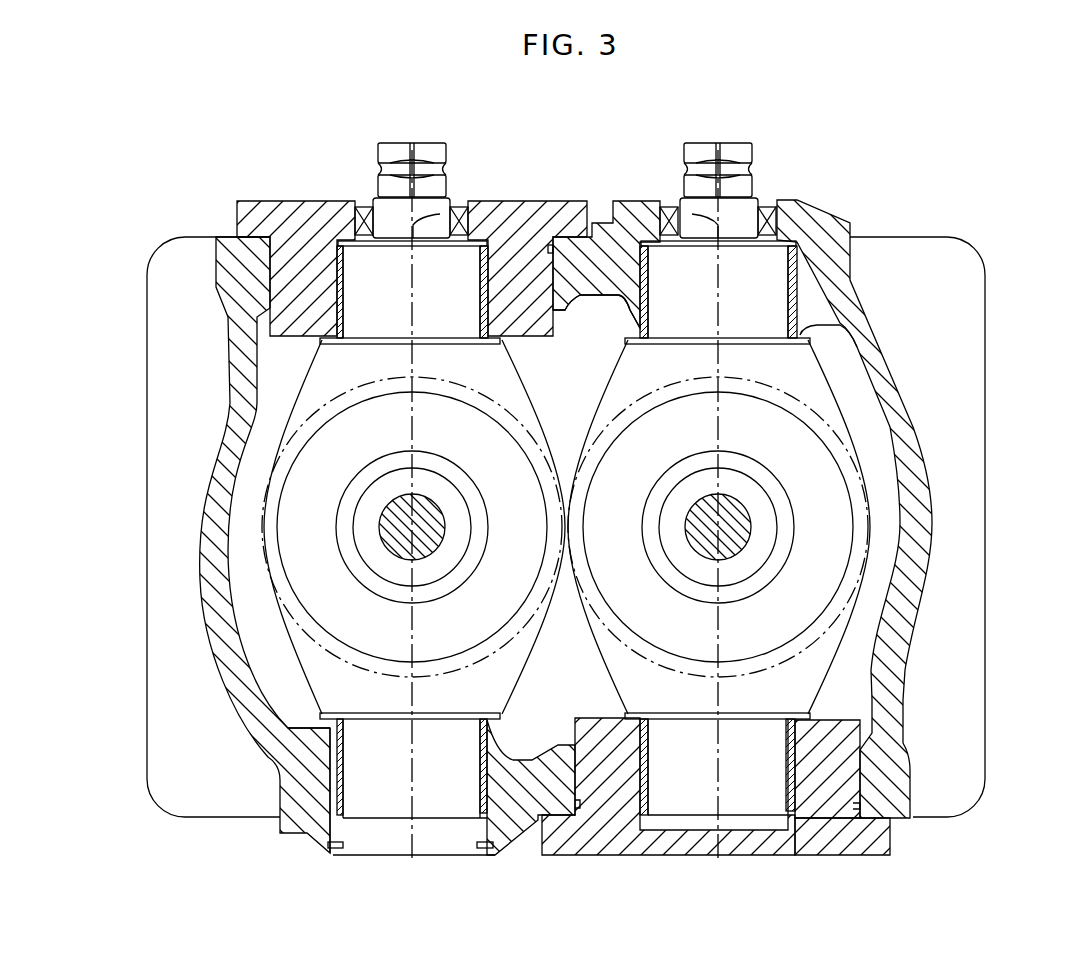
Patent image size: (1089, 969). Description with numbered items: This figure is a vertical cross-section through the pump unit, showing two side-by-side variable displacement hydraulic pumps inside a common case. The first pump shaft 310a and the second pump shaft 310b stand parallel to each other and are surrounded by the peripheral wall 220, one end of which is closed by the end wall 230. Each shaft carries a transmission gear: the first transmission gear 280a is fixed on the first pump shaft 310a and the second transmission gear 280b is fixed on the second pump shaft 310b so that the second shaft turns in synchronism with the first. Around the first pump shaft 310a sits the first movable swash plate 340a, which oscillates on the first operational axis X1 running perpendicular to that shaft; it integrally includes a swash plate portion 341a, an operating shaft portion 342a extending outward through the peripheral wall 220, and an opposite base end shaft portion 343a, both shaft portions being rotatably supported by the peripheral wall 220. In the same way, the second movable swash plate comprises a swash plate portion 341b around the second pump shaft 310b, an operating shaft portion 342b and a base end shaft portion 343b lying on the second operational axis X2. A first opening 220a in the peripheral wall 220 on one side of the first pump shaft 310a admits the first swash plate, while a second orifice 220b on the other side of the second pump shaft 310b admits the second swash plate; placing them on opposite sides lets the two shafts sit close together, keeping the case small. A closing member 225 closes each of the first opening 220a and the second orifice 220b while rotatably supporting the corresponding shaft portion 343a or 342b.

The closing member 225 is at (295, 227).
The operating shaft portion 342b is at (387, 218).
The second operational axis X2 is at (450, 190).
The second orifice 220b is at (543, 250).
The peripheral wall 220 is at (600, 250).
The first operational axis X1 is at (683, 190).
The operating shaft portion 342a is at (740, 217).
The first movable swash plate 340a is at (848, 393).
The second transmission gear 280b is at (472, 385).
The first transmission gear 280a is at (803, 396).
The second pump shaft 310b is at (392, 537).
The first pump shaft 310a is at (700, 542).
The swash plate portion 341b is at (227, 657).
The swash plate portion 341a is at (850, 652).
The end wall 230 is at (582, 696).
The base end shaft portion 343b is at (370, 793).
The base end shaft portion 343a is at (750, 790).
The first opening 220a is at (850, 800).